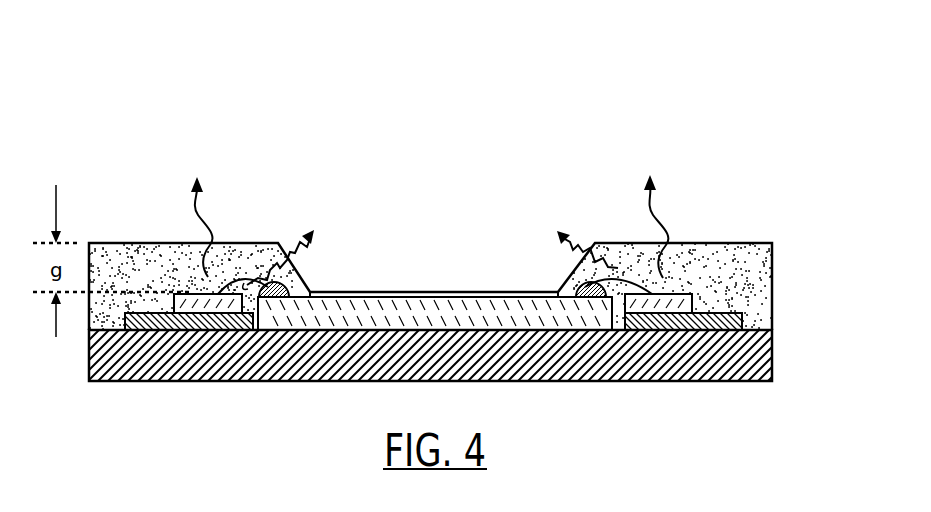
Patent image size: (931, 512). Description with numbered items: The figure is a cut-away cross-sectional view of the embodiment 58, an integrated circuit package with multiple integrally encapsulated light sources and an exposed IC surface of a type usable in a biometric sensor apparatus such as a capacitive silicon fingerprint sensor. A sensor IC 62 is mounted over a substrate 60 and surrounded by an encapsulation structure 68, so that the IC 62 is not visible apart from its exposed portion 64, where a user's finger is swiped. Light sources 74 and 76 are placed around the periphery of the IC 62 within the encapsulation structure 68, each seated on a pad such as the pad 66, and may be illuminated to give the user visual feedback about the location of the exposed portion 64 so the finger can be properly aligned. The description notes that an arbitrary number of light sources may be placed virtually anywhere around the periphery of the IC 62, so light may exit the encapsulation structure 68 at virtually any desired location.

The embodiment 58 is at (123, 98).
The substrate 60 is at (772, 353).
The IC 62 is at (425, 328).
The exposed portion 64 is at (455, 292).
The bond pad 66 is at (200, 325).
The encapsulation structure 68 is at (772, 258).
The light source 74 is at (675, 312).
The light source 76 is at (190, 305).